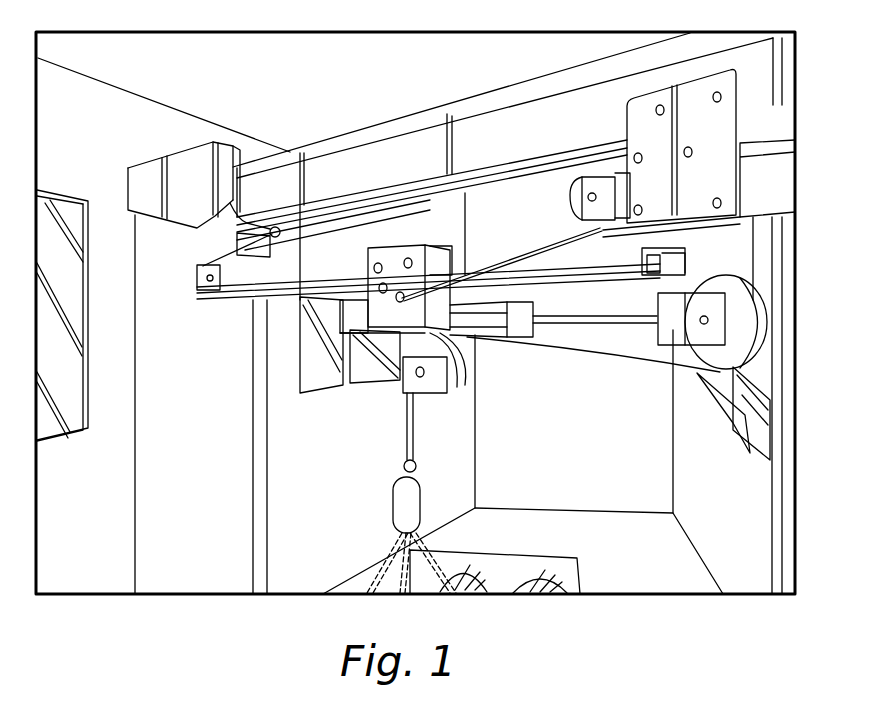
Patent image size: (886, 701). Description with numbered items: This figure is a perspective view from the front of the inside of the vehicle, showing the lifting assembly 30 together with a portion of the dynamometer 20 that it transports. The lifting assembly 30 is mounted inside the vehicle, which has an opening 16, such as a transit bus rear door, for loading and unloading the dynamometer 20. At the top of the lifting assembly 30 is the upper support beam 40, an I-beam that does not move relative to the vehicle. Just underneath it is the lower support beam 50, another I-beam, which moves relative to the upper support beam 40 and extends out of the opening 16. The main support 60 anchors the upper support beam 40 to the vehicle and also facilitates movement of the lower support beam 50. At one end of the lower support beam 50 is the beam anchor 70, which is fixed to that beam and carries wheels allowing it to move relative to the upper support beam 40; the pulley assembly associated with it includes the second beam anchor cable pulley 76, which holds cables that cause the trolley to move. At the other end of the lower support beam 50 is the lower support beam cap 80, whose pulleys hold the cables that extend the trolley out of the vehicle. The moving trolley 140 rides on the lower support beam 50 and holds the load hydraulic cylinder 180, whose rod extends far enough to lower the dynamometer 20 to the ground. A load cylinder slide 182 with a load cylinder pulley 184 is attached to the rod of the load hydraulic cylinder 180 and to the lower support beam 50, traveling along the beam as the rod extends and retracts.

The opening 16 is at (168, 568).
The dynamometer 20 is at (500, 573).
The lifting assembly 30 is at (545, 60).
The upper support beam 40 is at (375, 160).
The lower support beam 50 is at (283, 260).
The main support 60 is at (143, 177).
The beam anchor 70 is at (706, 175).
The second beam anchor cable pulley 76 is at (573, 192).
The lower support beam cap 80 is at (203, 277).
The moving trolley 140 is at (368, 320).
The load hydraulic cylinder 180 is at (493, 327).
The load cylinder slide 182 is at (655, 277).
The load cylinder pulley 184 is at (700, 353).